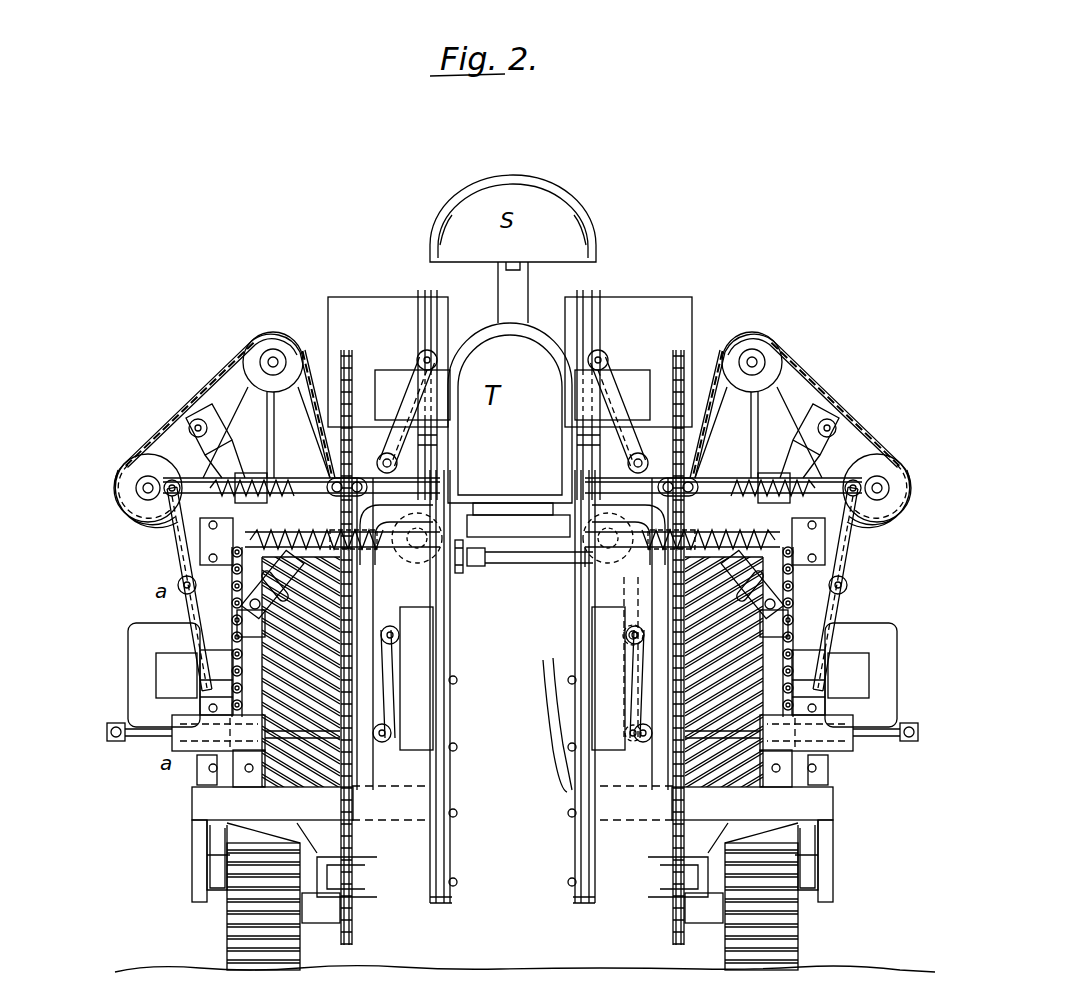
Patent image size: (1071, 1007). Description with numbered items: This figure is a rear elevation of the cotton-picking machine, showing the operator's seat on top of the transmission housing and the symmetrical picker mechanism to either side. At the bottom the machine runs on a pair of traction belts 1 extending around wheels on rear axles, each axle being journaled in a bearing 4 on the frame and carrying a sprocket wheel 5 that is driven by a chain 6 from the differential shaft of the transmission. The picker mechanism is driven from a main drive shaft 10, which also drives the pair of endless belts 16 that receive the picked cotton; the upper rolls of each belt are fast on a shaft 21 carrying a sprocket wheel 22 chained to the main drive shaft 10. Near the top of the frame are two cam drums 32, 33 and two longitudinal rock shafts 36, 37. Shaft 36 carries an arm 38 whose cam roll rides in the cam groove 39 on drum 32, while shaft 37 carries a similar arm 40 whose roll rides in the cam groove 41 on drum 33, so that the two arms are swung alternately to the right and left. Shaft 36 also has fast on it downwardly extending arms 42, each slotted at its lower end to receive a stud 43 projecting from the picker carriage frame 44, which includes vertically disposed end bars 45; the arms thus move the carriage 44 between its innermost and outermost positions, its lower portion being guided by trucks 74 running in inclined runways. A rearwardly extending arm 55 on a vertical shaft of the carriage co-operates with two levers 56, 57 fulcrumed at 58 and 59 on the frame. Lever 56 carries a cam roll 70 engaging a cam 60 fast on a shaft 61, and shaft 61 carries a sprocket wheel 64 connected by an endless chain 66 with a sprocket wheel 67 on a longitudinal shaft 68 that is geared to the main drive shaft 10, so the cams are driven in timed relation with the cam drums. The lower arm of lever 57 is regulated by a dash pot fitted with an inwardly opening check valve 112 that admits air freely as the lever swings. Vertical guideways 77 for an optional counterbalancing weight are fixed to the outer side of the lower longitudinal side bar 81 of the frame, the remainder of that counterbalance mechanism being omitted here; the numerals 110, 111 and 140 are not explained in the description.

The traction belt 1 is at (247, 942).
The bearing 4 is at (322, 917).
The sprocket wheel 5 is at (350, 930).
The chain 6 is at (337, 837).
The main drive shaft 10 is at (707, 352).
The endless belt 16 is at (420, 843).
The shaft 21 is at (497, 560).
The sprocket wheel 22 is at (467, 575).
The cam drum 32 is at (638, 307).
The cam drum 33 is at (362, 312).
The shaft 36 is at (654, 451).
The shaft 37 is at (374, 454).
The arm 38 is at (605, 362).
The cam groove 39 is at (588, 287).
The arm 40 is at (412, 367).
The cam groove 41 is at (425, 290).
The arm 42 is at (200, 597).
The stud 43 is at (790, 613).
The picker carriage frame 44 is at (203, 730).
The bar 45 is at (213, 413).
The arm 55 is at (832, 690).
The lever 56 is at (845, 607).
The lever 57 is at (616, 720).
The fulcrum 58 is at (840, 585).
The fulcrum 59 is at (623, 632).
The cam 60 is at (873, 463).
The shaft 61 is at (893, 467).
The sprocket wheel 64 is at (877, 517).
The endless chain 66 is at (808, 372).
The sprocket wheel 67 is at (753, 337).
The shaft 68 is at (758, 360).
The cam roll 70 is at (853, 460).
The truck 74 is at (778, 780).
The guideway 77 is at (827, 865).
The lower longitudinal side bar 81 is at (803, 890).
The cross beam 110 is at (300, 733).
The slide block 111 is at (213, 740).
The check valve 112 is at (902, 742).
The lever 140 is at (549, 710).